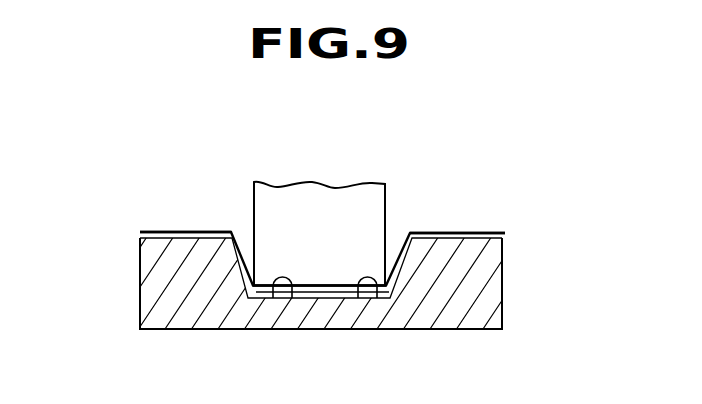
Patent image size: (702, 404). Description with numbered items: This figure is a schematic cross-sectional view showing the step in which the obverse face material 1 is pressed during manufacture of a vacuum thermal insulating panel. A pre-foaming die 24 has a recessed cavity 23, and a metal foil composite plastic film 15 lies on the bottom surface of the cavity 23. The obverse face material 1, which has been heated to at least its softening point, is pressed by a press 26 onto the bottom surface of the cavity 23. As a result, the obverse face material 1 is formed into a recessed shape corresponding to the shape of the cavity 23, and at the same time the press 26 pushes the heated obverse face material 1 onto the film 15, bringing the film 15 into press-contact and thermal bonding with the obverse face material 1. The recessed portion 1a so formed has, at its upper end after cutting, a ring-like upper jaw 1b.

The obverse face material 1 is at (487, 233).
The recessed portion 1a is at (371, 300).
The ring-like upper jaw 1b is at (140, 235).
The metal foil composite plastic film 15 is at (332, 293).
The recessed cavity 23 is at (273, 300).
The pre-foaming die 24 is at (483, 292).
The press 26 is at (377, 218).